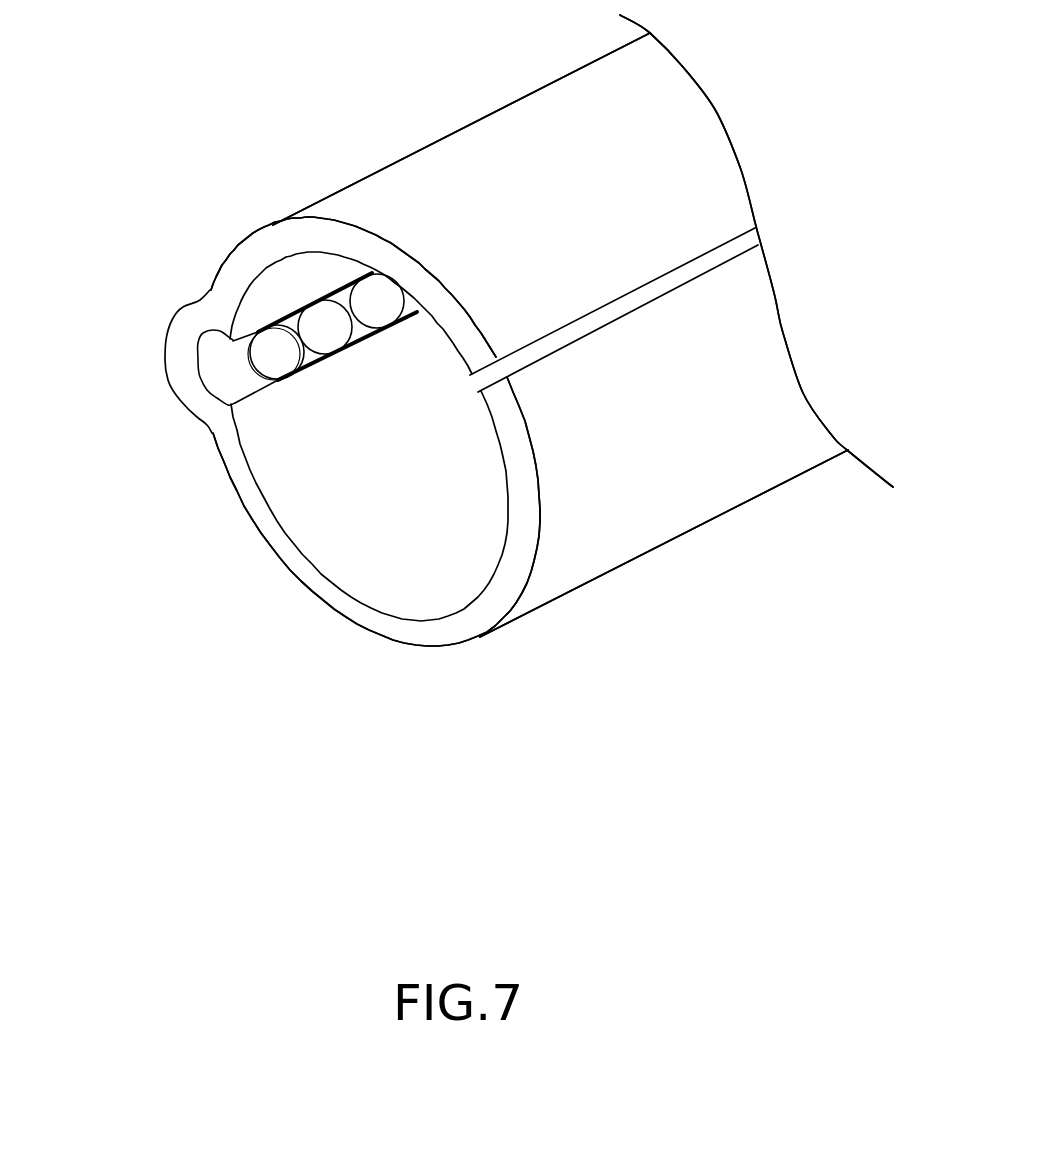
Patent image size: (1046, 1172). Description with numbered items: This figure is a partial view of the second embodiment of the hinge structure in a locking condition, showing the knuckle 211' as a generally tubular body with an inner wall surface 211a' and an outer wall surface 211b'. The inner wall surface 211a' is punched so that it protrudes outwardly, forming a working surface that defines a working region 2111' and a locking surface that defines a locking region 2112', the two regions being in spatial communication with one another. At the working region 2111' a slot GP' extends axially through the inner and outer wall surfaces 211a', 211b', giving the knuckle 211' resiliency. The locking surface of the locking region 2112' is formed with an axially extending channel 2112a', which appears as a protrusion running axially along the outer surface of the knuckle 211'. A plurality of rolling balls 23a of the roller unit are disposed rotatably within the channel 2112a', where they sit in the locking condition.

The knuckle 211' is at (533, 330).
The working region 2111' is at (583, 338).
The inner wall surface 211a' is at (345, 436).
The outer wall surface 211b' is at (375, 478).
The locking region 2112' is at (145, 372).
The channel 2112a' is at (271, 396).
The rolling balls 23a is at (268, 353).
The slot GP' is at (637, 218).